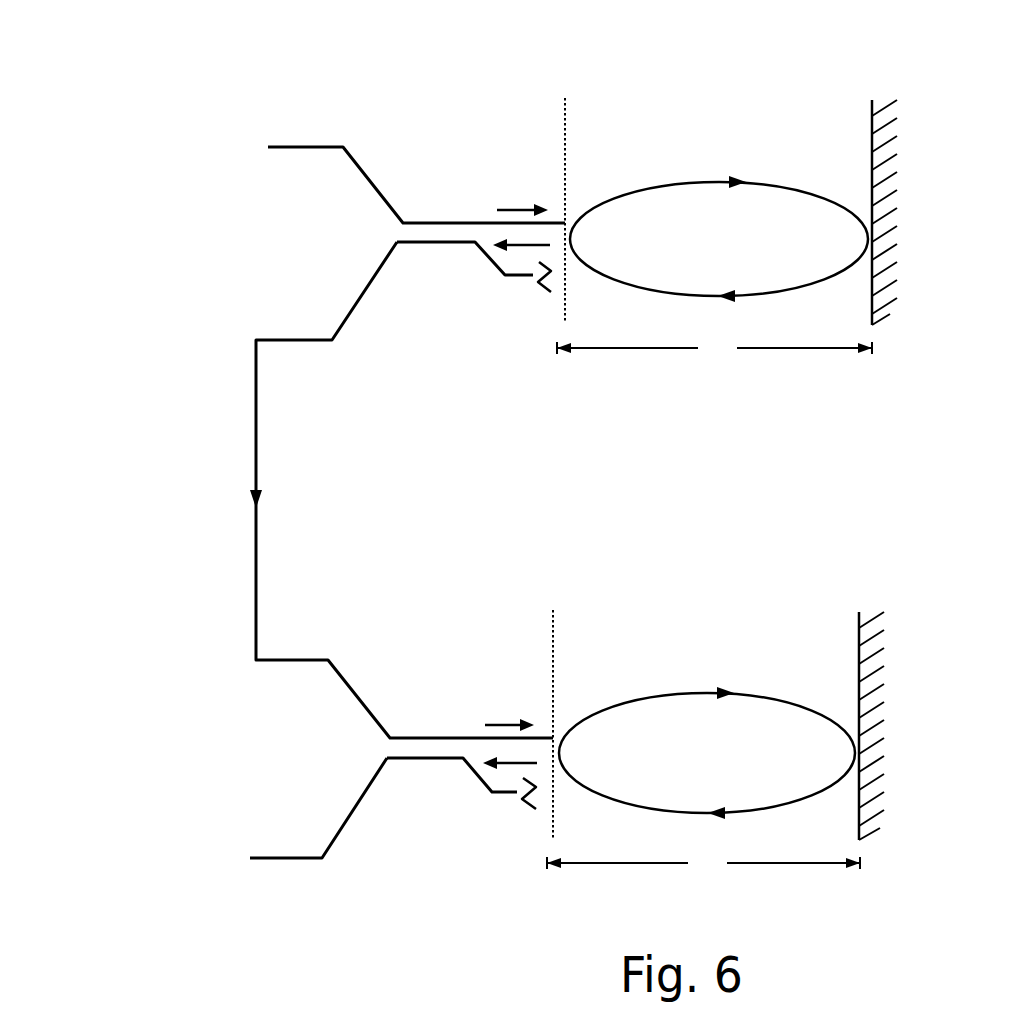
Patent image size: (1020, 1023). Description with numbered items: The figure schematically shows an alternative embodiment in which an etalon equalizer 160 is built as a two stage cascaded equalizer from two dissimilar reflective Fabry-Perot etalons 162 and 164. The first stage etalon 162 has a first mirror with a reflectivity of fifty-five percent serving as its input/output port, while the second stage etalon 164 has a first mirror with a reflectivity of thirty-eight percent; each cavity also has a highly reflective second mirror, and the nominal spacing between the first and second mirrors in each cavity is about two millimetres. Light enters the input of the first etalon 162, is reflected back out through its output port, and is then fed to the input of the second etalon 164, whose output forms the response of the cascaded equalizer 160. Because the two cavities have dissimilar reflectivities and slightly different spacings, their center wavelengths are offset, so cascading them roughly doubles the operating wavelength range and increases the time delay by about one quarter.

The etalon equalizer 160 is at (120, 488).
The first stage etalon 162 is at (637, 40).
The second stage etalon 164 is at (620, 550).